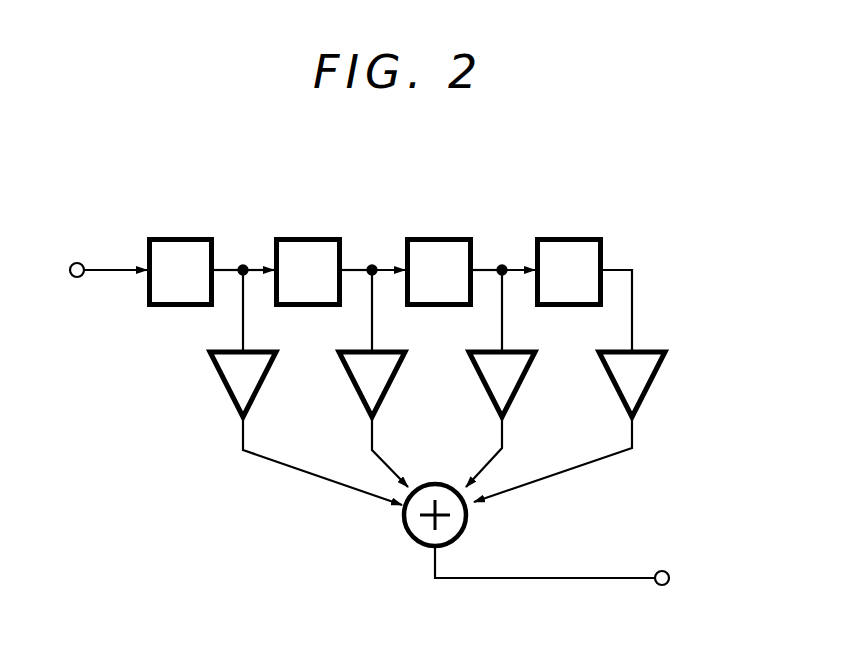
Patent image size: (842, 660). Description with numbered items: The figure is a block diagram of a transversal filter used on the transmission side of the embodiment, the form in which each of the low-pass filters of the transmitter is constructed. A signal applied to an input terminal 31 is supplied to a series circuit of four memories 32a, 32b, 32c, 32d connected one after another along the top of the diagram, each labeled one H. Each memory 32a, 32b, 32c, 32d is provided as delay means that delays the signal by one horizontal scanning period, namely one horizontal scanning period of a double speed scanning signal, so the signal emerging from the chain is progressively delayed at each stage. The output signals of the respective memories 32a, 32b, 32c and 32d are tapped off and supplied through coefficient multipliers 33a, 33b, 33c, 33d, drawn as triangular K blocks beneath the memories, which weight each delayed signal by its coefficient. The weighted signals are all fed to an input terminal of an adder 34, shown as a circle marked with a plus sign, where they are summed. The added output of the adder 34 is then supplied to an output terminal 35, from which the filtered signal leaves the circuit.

The input terminal 31 is at (77, 278).
The memory 32a is at (201, 237).
The memory 32b is at (330, 237).
The memory 32c is at (456, 237).
The memory 32d is at (596, 237).
The coefficient multiplier 33a is at (262, 380).
The coefficient multiplier 33b is at (391, 380).
The coefficient multiplier 33c is at (521, 380).
The coefficient multiplier 33d is at (651, 380).
The adder 34 is at (468, 527).
The output terminal 35 is at (669, 575).